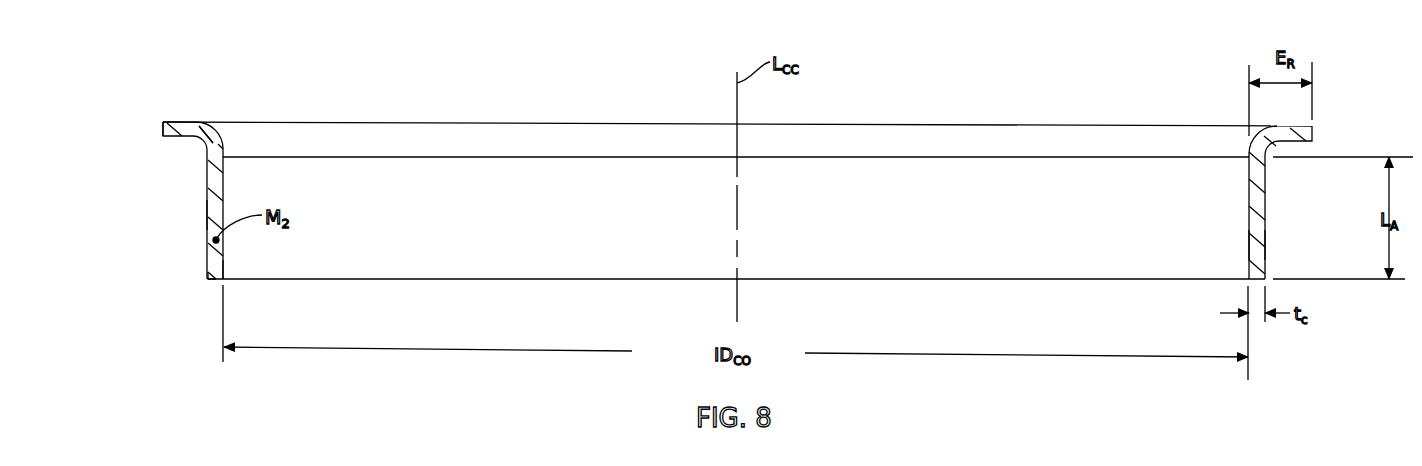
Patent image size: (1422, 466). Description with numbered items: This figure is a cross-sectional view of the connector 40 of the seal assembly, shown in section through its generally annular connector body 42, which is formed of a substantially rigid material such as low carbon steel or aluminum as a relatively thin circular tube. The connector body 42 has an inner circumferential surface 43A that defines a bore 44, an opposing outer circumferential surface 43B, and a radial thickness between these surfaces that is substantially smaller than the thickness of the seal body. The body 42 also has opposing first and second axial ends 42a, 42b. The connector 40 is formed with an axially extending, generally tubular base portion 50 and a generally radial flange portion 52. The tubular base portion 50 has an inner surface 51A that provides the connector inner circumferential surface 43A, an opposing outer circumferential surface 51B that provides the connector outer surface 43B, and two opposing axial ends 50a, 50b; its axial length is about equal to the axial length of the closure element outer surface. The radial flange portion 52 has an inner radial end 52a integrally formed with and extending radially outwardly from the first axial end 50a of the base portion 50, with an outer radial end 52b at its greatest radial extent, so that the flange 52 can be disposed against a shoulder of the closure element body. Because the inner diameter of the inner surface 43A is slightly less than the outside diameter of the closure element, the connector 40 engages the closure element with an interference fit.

The connector 40 is at (178, 71).
The connector body 42 is at (180, 181).
The first axial end of connector body 42a is at (216, 282).
The second axial end of connector body 42b is at (190, 118).
The inner circumferential surface 43A is at (1248, 198).
The outer circumferential surface 43B is at (1266, 219).
The bore 44 is at (993, 175).
The tubular base portion 50 is at (207, 215).
The first axial end of base portion 50a is at (222, 151).
The second axial end of base portion 50b is at (222, 272).
The inner surface of base portion 51A is at (1248, 244).
The outer circumferential surface of base portion 51B is at (1266, 240).
The radial flange portion 52 is at (172, 118).
The inner radial end of flange portion 52a is at (218, 144).
The outer end of flange 52b is at (164, 132).